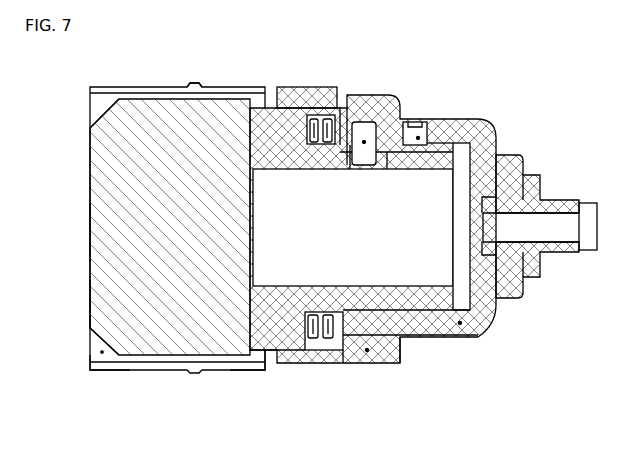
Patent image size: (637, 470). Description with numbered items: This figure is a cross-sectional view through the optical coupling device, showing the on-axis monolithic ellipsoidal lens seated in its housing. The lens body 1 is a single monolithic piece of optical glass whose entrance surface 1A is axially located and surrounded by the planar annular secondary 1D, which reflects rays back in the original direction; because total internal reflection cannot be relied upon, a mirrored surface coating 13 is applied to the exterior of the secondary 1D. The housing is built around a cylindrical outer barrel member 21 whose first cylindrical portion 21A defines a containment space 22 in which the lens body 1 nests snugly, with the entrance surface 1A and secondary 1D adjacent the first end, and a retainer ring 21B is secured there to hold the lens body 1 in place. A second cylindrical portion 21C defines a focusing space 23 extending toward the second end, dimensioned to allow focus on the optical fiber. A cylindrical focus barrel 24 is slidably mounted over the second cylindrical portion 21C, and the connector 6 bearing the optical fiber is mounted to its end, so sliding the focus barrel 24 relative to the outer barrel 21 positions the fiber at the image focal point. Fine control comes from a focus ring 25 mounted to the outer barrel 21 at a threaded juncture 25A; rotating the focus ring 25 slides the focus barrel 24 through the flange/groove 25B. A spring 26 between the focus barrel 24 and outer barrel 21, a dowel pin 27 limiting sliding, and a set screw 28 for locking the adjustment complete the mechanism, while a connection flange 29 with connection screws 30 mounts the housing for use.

The lens body 1 is at (166, 122).
The entrance surface 1A is at (92, 232).
The secondary 1D is at (92, 300).
The mirrored surface coating 13 is at (90, 160).
The cylindrical outer barrel member 21 is at (189, 376).
The first cylindrical portion 21A is at (260, 368).
The retainer ring 21B is at (100, 374).
The second cylindrical portion 21C is at (412, 352).
The containment space 22 is at (250, 95).
The focusing space 23 is at (281, 262).
The focus barrel 24 is at (484, 366).
The focus ring 25 is at (370, 364).
The threaded juncture 25A is at (310, 351).
The flange/groove 25B is at (339, 108).
The spring 26 is at (337, 107).
The dowel pin 27 is at (390, 95).
The set screw 28 is at (478, 119).
The connection flange 29 is at (194, 83).
The connection screws 30 is at (540, 272).
The connector 6 is at (500, 298).